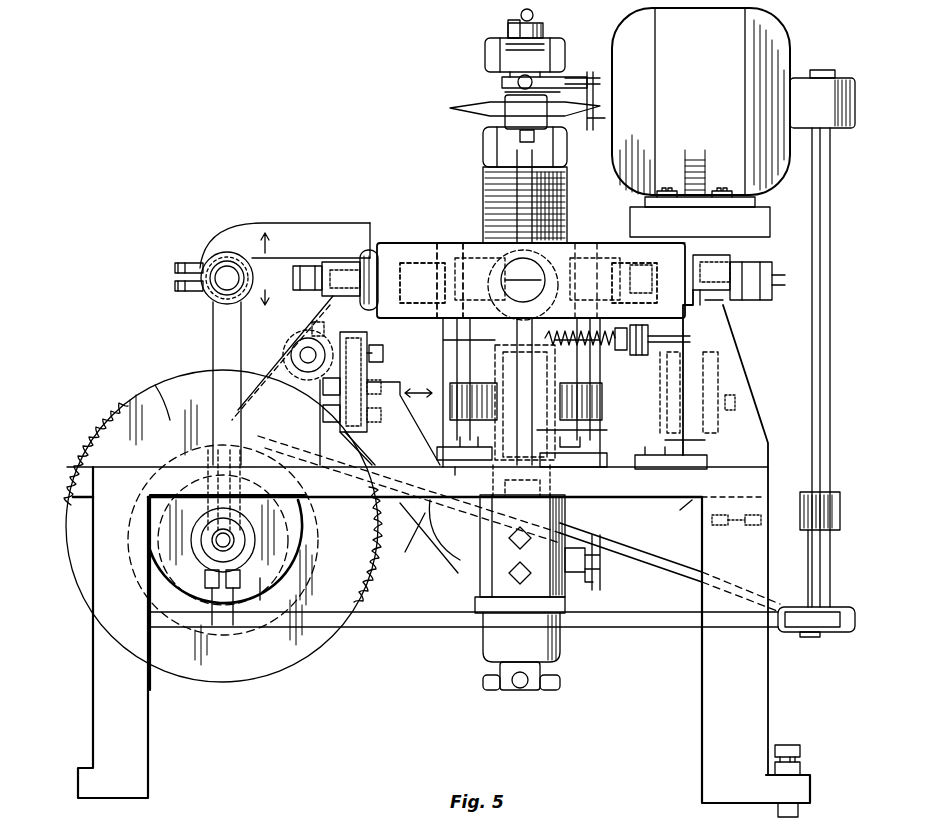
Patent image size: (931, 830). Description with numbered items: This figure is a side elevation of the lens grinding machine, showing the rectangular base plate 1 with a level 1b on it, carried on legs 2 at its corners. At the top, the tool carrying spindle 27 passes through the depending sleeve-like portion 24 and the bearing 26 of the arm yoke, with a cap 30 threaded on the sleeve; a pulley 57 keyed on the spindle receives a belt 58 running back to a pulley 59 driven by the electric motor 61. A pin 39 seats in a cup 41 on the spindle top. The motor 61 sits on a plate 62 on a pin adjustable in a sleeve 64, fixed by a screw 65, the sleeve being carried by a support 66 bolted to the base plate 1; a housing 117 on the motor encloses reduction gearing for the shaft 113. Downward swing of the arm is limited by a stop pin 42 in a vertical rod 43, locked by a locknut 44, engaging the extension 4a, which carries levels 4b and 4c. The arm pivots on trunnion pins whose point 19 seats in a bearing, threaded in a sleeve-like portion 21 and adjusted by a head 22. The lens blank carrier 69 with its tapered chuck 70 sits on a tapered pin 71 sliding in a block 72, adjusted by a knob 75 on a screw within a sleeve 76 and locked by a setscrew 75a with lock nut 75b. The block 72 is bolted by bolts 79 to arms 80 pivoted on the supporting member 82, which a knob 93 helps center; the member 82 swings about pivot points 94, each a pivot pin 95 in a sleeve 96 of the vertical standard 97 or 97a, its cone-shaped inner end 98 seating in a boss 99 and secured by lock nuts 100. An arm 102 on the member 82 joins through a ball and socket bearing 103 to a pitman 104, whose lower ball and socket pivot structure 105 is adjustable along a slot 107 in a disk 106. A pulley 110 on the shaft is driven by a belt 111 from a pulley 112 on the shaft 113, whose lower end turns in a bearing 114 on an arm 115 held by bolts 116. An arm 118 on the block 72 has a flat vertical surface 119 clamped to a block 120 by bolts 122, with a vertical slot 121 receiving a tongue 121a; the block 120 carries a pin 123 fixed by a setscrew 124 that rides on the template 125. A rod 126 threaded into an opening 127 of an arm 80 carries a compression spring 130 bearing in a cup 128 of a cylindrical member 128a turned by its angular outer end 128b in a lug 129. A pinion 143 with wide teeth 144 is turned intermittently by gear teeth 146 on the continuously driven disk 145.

The base plate 1 is at (695, 500).
The level 1b is at (463, 480).
The legs 2 is at (128, 692).
The extension 4a is at (505, 125).
The level 4b is at (502, 80).
The level 4c is at (525, 75).
The point 19 is at (463, 271).
The sleeve-like portion 21 is at (441, 270).
The head 22 is at (640, 272).
The sleeve-like portion 24 is at (490, 205).
The bearing 26 is at (566, 50).
The tool carrying spindle 27 is at (545, 30).
The cap 30 is at (567, 243).
The pin 39 is at (534, 15).
The cup 41 is at (508, 26).
The stop pin 42 is at (520, 136).
The vertical rod 43 is at (517, 180).
The locknut 44 is at (490, 155).
The pulley 57 is at (592, 106).
The belt 58 is at (580, 79).
The pulley 59 is at (595, 82).
The electric motor 61 is at (625, 150).
The plate 62 is at (765, 220).
The sleeve 64 is at (720, 370).
The screw 65 is at (735, 400).
The support 66 is at (706, 440).
The lens blank carrier 69 is at (470, 405).
The tapered chuck 70 is at (545, 445).
The tapered pin 71 is at (545, 478).
The block 72 is at (565, 514).
The knob 75 is at (555, 678).
The setscrew 75a is at (600, 568).
The lock nut 75b is at (592, 580).
The sleeve 76 is at (492, 635).
The bolts 79 is at (510, 540).
The arms 80 is at (598, 430).
The supporting member 82 is at (605, 248).
The knob 93 is at (508, 274).
The pivot points 94 is at (370, 243).
The pivot pin 95 is at (305, 266).
The sleeve 96 is at (340, 262).
The vertical standard 97 is at (725, 325).
The vertical standard 97a is at (295, 340).
The cone-shaped inner end 98 is at (700, 211).
The boss 99 is at (372, 252).
The lock nuts 100 is at (765, 297).
The arm 102 is at (283, 223).
The ball and socket bearing 103 is at (230, 270).
The pitman 104 is at (213, 338).
The ball and socket pivot structure 105 is at (212, 556).
The disk 106 is at (260, 600).
The slot 107 is at (236, 480).
The pulley 110 is at (222, 530).
The belt 111 is at (675, 616).
The pulley 112 is at (798, 632).
The shaft 113 is at (832, 226).
The bearing 114 is at (805, 492).
The arm 115 is at (790, 530).
The bolts 116 is at (728, 527).
The housing 117 is at (800, 92).
The arm 118 is at (410, 538).
The flat vertical surface 119 is at (395, 408).
The block 120 is at (358, 434).
The vertical slot 121 is at (375, 385).
The tongue 121a is at (380, 392).
The bolts 122 is at (340, 425).
The pin 123 is at (383, 350).
The setscrew 124 is at (380, 300).
The template 125 is at (290, 345).
The rod 126 is at (620, 350).
The opening 127 is at (520, 345).
The cup 128 is at (632, 292).
The cylindrical member 128a is at (668, 395).
The angular outer end 128b is at (690, 339).
The lug 129 is at (640, 356).
The compression spring 130 is at (580, 375).
The pinion 143 is at (312, 330).
The wide teeth 144 is at (300, 380).
The disk 145 is at (160, 390).
The gear teeth 146 is at (98, 425).